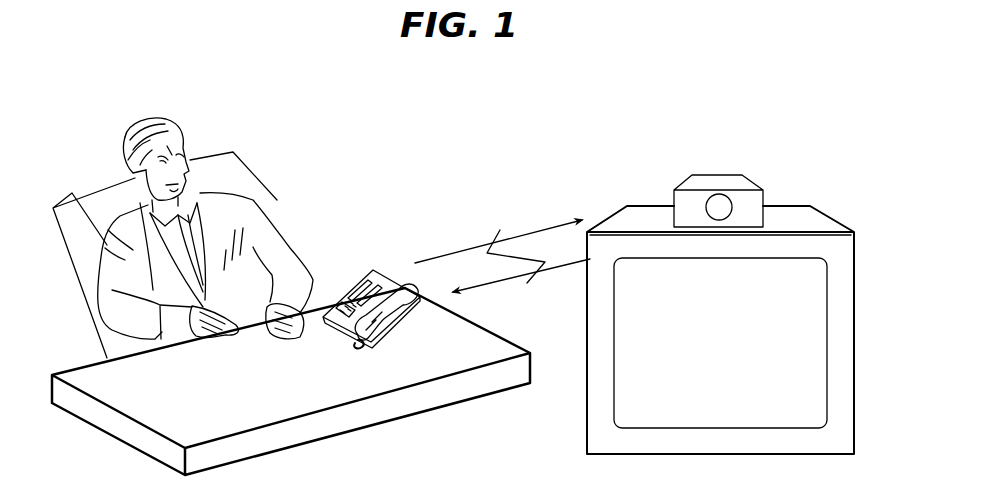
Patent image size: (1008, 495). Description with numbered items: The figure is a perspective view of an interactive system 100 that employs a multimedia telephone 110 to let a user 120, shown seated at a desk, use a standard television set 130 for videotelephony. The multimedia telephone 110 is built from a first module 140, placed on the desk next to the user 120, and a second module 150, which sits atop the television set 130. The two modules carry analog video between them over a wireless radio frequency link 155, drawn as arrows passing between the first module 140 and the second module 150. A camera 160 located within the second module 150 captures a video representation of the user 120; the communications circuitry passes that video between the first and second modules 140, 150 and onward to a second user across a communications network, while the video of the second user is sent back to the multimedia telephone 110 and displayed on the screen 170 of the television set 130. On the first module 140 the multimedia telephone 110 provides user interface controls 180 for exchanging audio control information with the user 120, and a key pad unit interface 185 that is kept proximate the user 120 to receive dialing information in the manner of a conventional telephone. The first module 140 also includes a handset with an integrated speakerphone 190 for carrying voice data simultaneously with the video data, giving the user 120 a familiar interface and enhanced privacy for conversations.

The interactive system 100 is at (364, 94).
The multimedia telephone 110 is at (518, 152).
The user 120 is at (113, 160).
The television set 130 is at (862, 312).
The first module 140 is at (398, 265).
The second module 150 is at (775, 193).
The RF link 155 is at (500, 230).
The camera 160 is at (717, 200).
The screen 170 is at (740, 359).
The user interface controls 180 is at (400, 323).
The key pad unit interface 185 is at (355, 343).
The handset with integrated speakerphone 190 is at (377, 280).